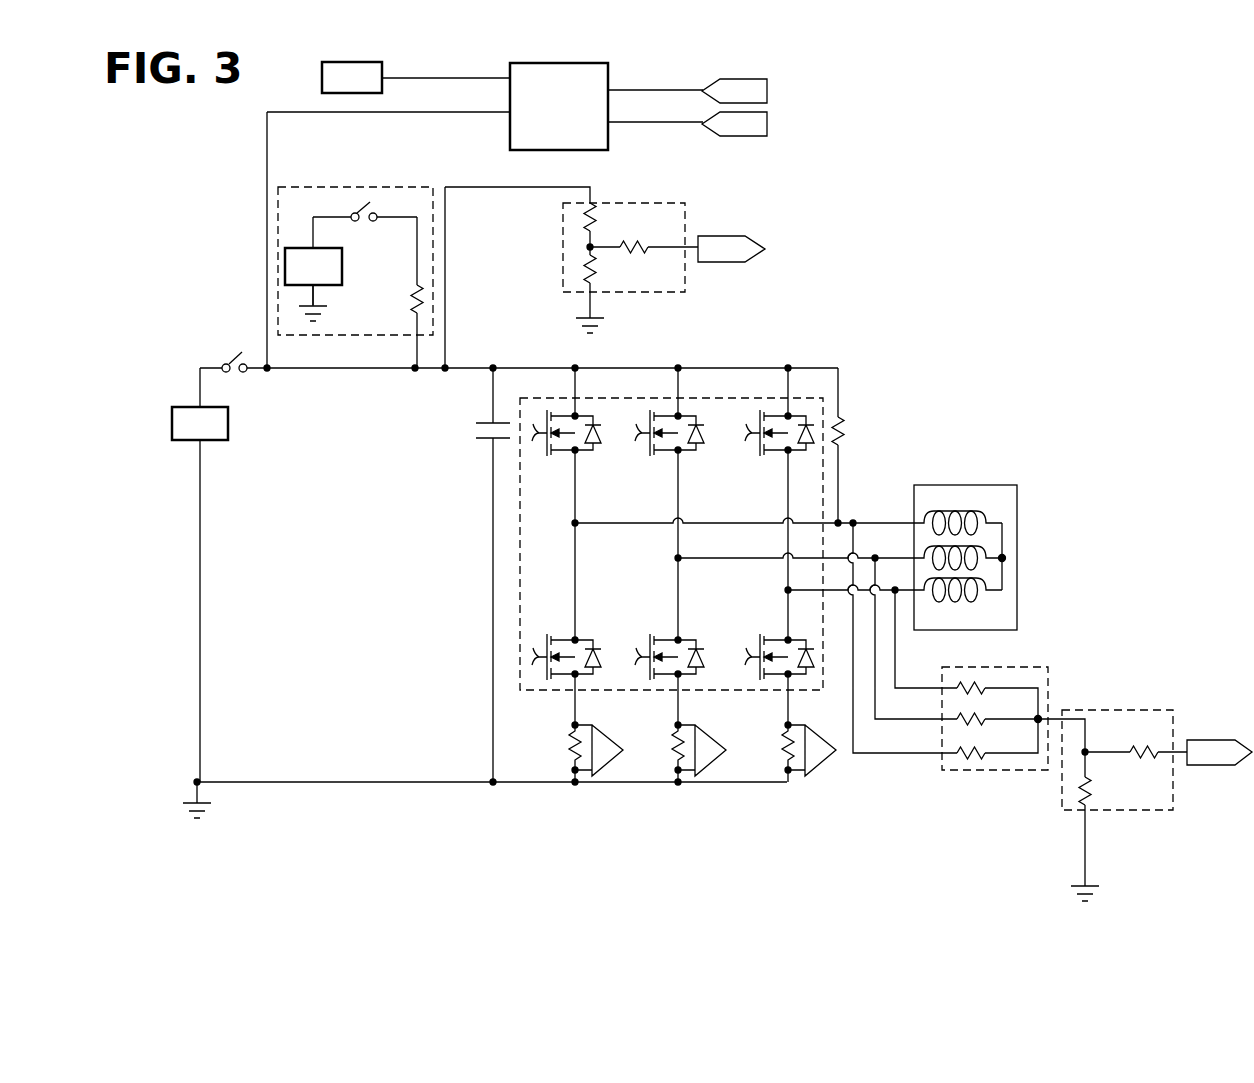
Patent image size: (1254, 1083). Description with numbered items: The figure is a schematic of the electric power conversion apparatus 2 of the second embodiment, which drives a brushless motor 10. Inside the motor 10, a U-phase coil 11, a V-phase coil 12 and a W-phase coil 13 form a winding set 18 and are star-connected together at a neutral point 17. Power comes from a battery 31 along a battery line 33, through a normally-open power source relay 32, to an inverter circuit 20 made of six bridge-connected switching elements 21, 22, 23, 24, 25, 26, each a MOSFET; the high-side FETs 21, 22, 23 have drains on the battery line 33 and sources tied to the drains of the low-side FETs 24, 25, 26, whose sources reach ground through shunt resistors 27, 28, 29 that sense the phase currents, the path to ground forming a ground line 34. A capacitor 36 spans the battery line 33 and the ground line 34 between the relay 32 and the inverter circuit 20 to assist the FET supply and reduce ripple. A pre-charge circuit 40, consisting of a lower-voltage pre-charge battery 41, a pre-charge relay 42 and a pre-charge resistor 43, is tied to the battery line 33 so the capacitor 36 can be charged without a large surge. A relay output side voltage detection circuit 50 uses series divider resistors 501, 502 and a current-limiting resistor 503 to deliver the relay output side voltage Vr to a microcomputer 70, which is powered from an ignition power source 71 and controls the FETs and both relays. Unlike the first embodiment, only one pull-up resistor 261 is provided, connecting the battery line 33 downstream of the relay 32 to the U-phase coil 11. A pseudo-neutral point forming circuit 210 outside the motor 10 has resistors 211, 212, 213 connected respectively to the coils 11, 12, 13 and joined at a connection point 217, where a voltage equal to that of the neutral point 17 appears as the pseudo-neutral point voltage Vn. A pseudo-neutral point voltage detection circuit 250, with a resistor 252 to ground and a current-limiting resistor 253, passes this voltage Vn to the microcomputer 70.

The electric power conversion apparatus 2 is at (349, 811).
The motor 10 is at (993, 566).
The U-phase coil 11 is at (975, 512).
The V-phase coil 12 is at (985, 547).
The W-phase coil 13 is at (969, 603).
The neutral point 17 is at (1005, 558).
The winding set 18 is at (948, 602).
The inverter circuit 20 is at (717, 518).
The switching element (FET) 21 is at (565, 455).
The switching element (FET) 22 is at (668, 455).
The switching element (FET) 23 is at (778, 455).
The switching element (FET) 24 is at (565, 636).
The switching element (FET) 25 is at (668, 636).
The switching element (FET) 26 is at (778, 636).
The shunt resistor 27 is at (556, 753).
The shunt resistor 28 is at (664, 758).
The shunt resistor 29 is at (773, 758).
The battery (PIG) 31 is at (186, 405).
The power source relay 32 is at (224, 362).
The battery line 33 is at (483, 366).
The ground line 34 is at (407, 785).
The capacitor 36 is at (478, 421).
The pre-charge circuit 40 is at (355, 254).
The pre-charge battery 41 is at (343, 264).
The pre-charge relay 42 is at (357, 210).
The pre-charge resistor 43 is at (412, 290).
The relay output side voltage detection circuit 50 is at (605, 244).
The resistor 501 is at (588, 216).
The resistor 502 is at (588, 262).
The resistor 503 is at (642, 252).
The microcomputer 70 is at (511, 70).
The ignition power source 71 is at (322, 78).
The pseudo-neutral point forming circuit 210 is at (979, 673).
The resistor 211 is at (986, 684).
The resistor 212 is at (956, 722).
The resistor 213 is at (975, 758).
The connection point 217 is at (1042, 718).
The pseudo-neutral point voltage detection circuit 250 is at (1145, 779).
The resistor 252 is at (1090, 800).
The resistor 253 is at (1146, 760).
The pull-up resistor 261 is at (841, 417).